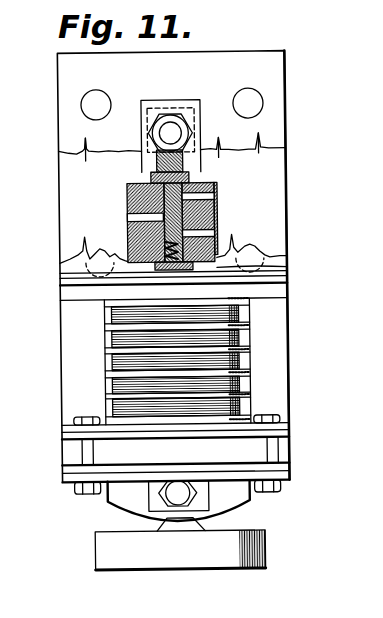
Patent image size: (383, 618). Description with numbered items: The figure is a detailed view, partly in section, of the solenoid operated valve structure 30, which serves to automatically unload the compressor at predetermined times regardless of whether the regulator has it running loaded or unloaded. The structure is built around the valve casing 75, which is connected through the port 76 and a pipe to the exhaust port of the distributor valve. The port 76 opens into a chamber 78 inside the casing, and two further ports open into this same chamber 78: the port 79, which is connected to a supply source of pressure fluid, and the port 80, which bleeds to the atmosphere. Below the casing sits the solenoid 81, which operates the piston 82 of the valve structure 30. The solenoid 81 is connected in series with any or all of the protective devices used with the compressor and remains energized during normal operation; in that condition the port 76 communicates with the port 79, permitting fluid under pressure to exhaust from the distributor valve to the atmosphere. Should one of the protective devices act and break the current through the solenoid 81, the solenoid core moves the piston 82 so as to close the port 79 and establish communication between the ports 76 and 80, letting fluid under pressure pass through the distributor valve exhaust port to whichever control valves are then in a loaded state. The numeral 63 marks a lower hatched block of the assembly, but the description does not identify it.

The solenoid operated valve structure 30 is at (280, 204).
The base block 63 is at (100, 263).
The valve casing 75 is at (257, 221).
The port 76 is at (87, 218).
The chamber 78 is at (252, 243).
The port 79 is at (214, 183).
The port 80 is at (288, 269).
The solenoid 81 is at (221, 359).
The piston 82 is at (88, 222).